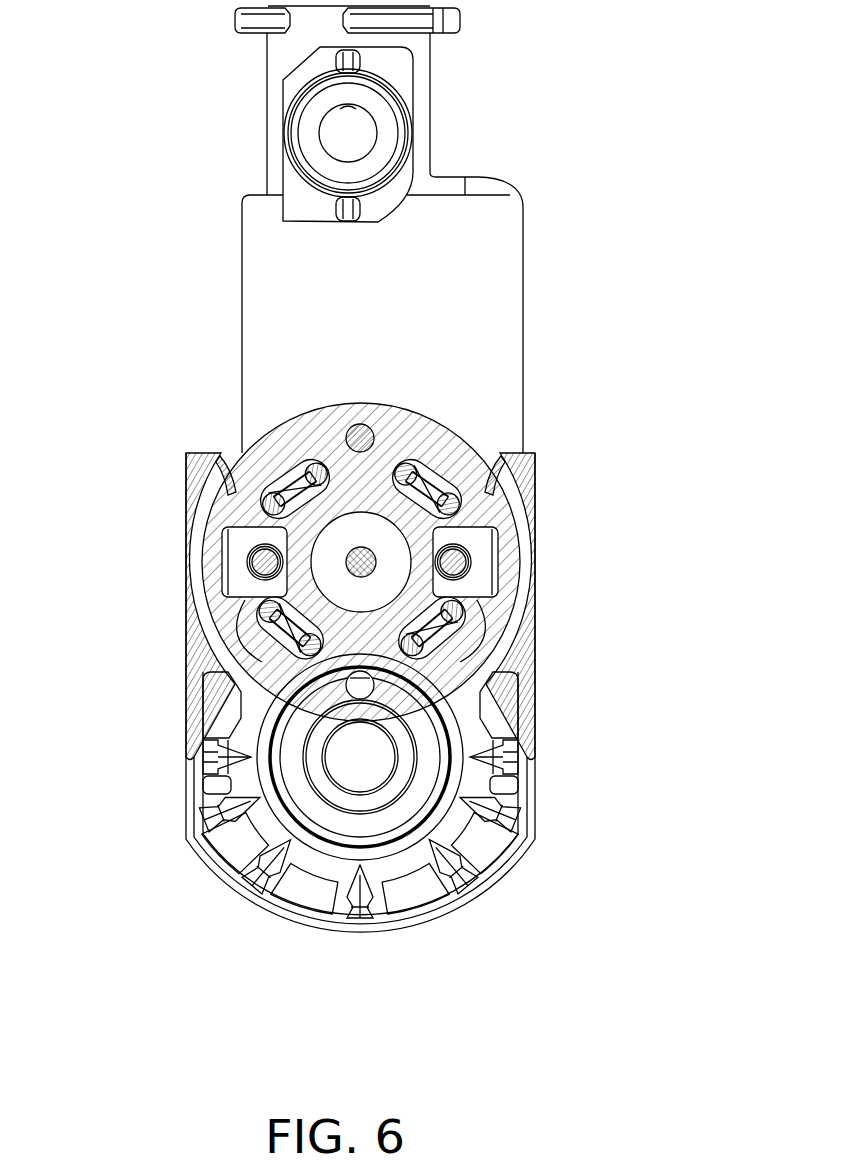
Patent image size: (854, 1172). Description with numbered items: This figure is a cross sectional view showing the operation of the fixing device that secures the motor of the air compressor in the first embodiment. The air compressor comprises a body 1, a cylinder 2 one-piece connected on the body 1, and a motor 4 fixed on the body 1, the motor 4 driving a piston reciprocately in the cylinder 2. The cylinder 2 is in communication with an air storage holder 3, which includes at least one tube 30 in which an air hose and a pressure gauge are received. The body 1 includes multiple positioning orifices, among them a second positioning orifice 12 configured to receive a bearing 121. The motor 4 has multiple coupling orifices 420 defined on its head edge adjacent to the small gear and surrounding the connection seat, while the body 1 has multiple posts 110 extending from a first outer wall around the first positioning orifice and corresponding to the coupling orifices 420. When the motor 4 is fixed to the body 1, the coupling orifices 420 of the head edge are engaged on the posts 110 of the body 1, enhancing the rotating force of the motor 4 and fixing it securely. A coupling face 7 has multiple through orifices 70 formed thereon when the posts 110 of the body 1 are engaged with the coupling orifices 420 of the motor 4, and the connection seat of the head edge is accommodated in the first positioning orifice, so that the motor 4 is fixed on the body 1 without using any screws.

The body 1 is at (475, 722).
The cylinder 2 is at (503, 315).
The air storage holder 3 is at (422, 77).
The motor 4 is at (407, 432).
The coupling face 7 is at (507, 562).
The second positioning orifice 12 is at (470, 790).
The tube 30 is at (312, 127).
The through orifices 70 is at (302, 487).
The posts 110 is at (396, 468).
The bearing 121 is at (420, 783).
The coupling orifices 420 is at (227, 482).